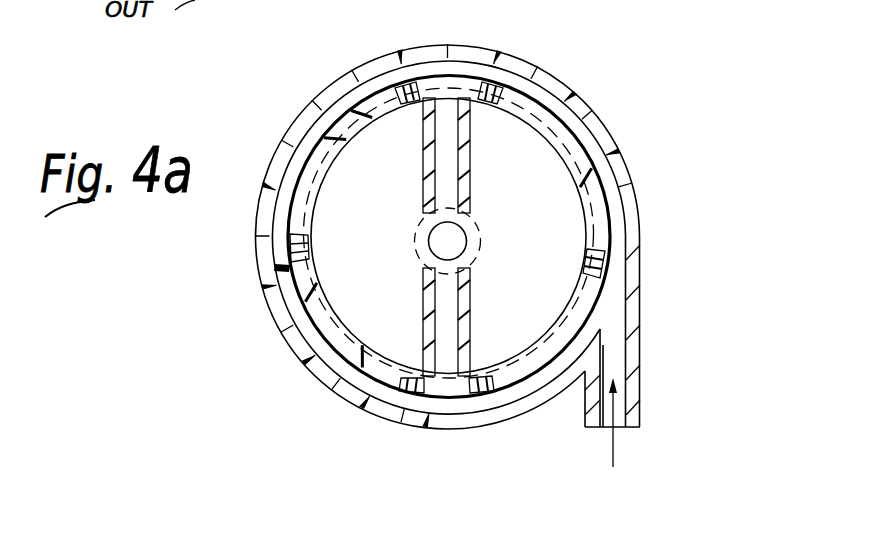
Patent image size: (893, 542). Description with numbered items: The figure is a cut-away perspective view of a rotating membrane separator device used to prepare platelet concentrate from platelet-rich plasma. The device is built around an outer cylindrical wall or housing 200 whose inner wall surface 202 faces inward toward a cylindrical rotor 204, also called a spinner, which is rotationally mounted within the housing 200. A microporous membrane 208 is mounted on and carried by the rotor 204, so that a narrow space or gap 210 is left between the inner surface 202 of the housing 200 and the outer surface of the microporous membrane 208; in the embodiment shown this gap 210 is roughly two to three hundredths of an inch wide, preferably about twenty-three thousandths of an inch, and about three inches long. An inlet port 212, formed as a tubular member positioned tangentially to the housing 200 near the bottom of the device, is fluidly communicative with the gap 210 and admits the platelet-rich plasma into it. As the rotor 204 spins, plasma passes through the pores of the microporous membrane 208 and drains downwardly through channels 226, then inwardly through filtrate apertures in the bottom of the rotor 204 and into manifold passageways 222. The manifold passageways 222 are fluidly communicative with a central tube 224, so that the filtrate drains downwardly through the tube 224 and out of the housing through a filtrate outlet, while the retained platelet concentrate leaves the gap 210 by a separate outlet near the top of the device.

The housing 200 is at (546, 72).
The inner wall surface 202 is at (600, 222).
The rotor 204 is at (587, 304).
The microporous membrane 208 is at (603, 270).
The gap 210 is at (580, 118).
The inlet port 212 is at (634, 381).
The manifold passageways 222 is at (443, 170).
The central tube 224 is at (455, 243).
The channels 226 is at (418, 80).